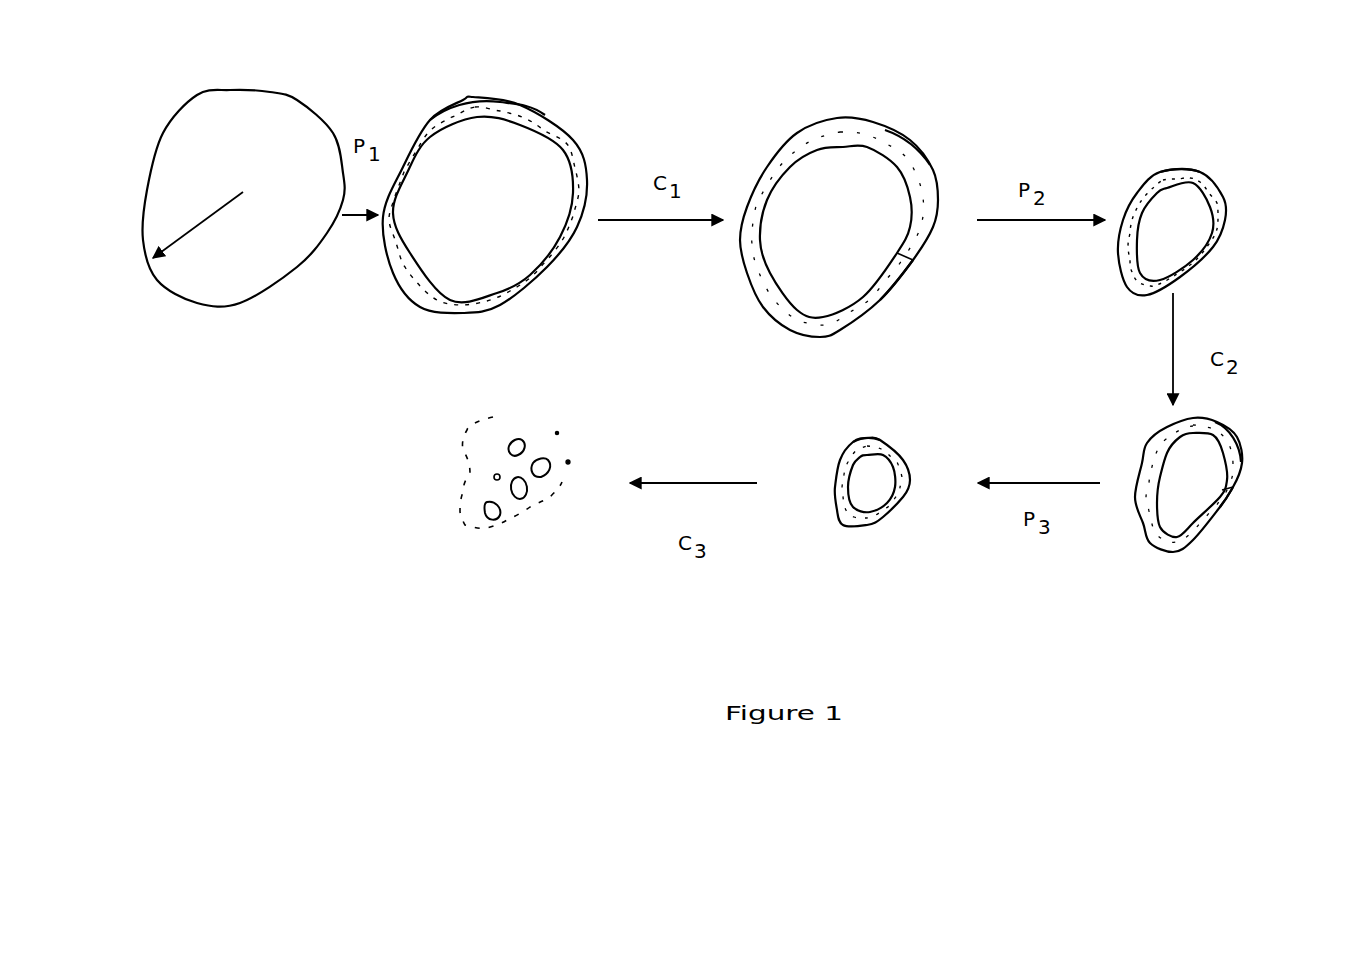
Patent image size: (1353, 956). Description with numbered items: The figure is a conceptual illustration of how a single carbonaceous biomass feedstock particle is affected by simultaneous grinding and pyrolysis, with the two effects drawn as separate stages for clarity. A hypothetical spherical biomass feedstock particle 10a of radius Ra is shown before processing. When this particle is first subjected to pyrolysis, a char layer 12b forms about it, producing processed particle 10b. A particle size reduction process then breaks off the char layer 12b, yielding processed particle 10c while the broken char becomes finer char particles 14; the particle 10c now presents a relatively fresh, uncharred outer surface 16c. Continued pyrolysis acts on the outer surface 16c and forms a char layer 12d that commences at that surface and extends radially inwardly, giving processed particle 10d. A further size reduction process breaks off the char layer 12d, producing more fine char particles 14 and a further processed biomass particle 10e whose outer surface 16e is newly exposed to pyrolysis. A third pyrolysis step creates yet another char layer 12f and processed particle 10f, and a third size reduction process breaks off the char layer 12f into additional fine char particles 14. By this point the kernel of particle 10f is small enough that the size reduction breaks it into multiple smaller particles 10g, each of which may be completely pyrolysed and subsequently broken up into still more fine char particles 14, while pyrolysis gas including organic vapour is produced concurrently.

The radius Ra is at (198, 223).
The biomass feedstock particle 10a is at (237, 270).
The processed particle 10b is at (440, 262).
The char layer 12b is at (507, 97).
The processed particle 10c is at (803, 257).
The fine char particles 14 is at (923, 153).
The outer surface 16c is at (900, 258).
The processed particle 10d is at (1175, 225).
The char layer 12d is at (1200, 172).
The processed biomass particle 10e is at (1190, 498).
The outer surface 16e is at (1223, 490).
The processed particle 10f is at (867, 483).
The char layer 12f is at (880, 440).
The smaller particles 10g is at (522, 440).